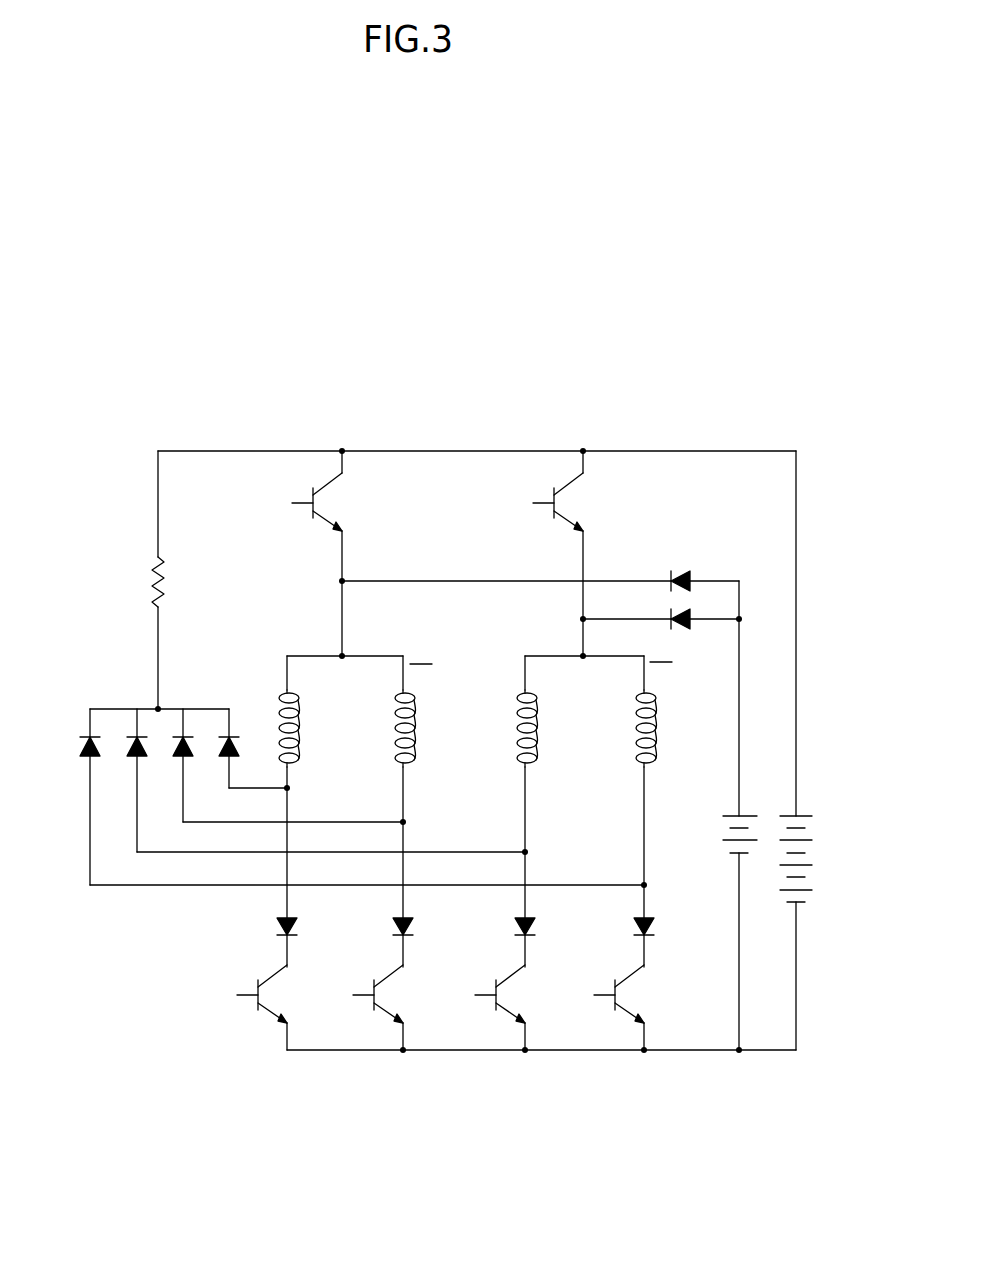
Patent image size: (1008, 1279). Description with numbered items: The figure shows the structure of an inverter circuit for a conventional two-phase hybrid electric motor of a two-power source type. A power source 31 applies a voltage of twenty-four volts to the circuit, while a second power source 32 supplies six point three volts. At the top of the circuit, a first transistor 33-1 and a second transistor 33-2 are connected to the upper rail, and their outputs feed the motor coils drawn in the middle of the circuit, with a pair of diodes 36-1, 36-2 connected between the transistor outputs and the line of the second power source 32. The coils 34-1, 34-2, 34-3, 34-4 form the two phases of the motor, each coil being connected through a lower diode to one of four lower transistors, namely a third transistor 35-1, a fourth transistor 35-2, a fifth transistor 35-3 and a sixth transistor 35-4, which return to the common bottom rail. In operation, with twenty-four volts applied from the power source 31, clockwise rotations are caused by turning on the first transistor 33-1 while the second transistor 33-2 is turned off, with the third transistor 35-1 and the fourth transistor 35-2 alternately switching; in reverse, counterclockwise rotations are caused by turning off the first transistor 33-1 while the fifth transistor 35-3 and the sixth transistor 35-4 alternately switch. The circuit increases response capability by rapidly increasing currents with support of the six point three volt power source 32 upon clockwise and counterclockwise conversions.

The power source 31 is at (803, 812).
The power source 32 is at (745, 812).
The transistor (TR1) 33-1 is at (296, 502).
The transistor (TR2) 33-2 is at (537, 502).
The phase A coil (PhA) 34-1 is at (232, 811).
The phase A-bar coil 34-2 is at (287, 820).
The phase B coil 34-3 is at (535, 757).
The phase B-bar coil 34-4 is at (656, 718).
The transistor (TR3) 35-1 is at (249, 1000).
The transistor (TR4) 35-2 is at (364, 1000).
The transistor (TR5) 35-3 is at (487, 1000).
The transistor (TR6) 35-4 is at (617, 997).
The diode 36-1 is at (678, 573).
The diode 36-2 is at (689, 612).